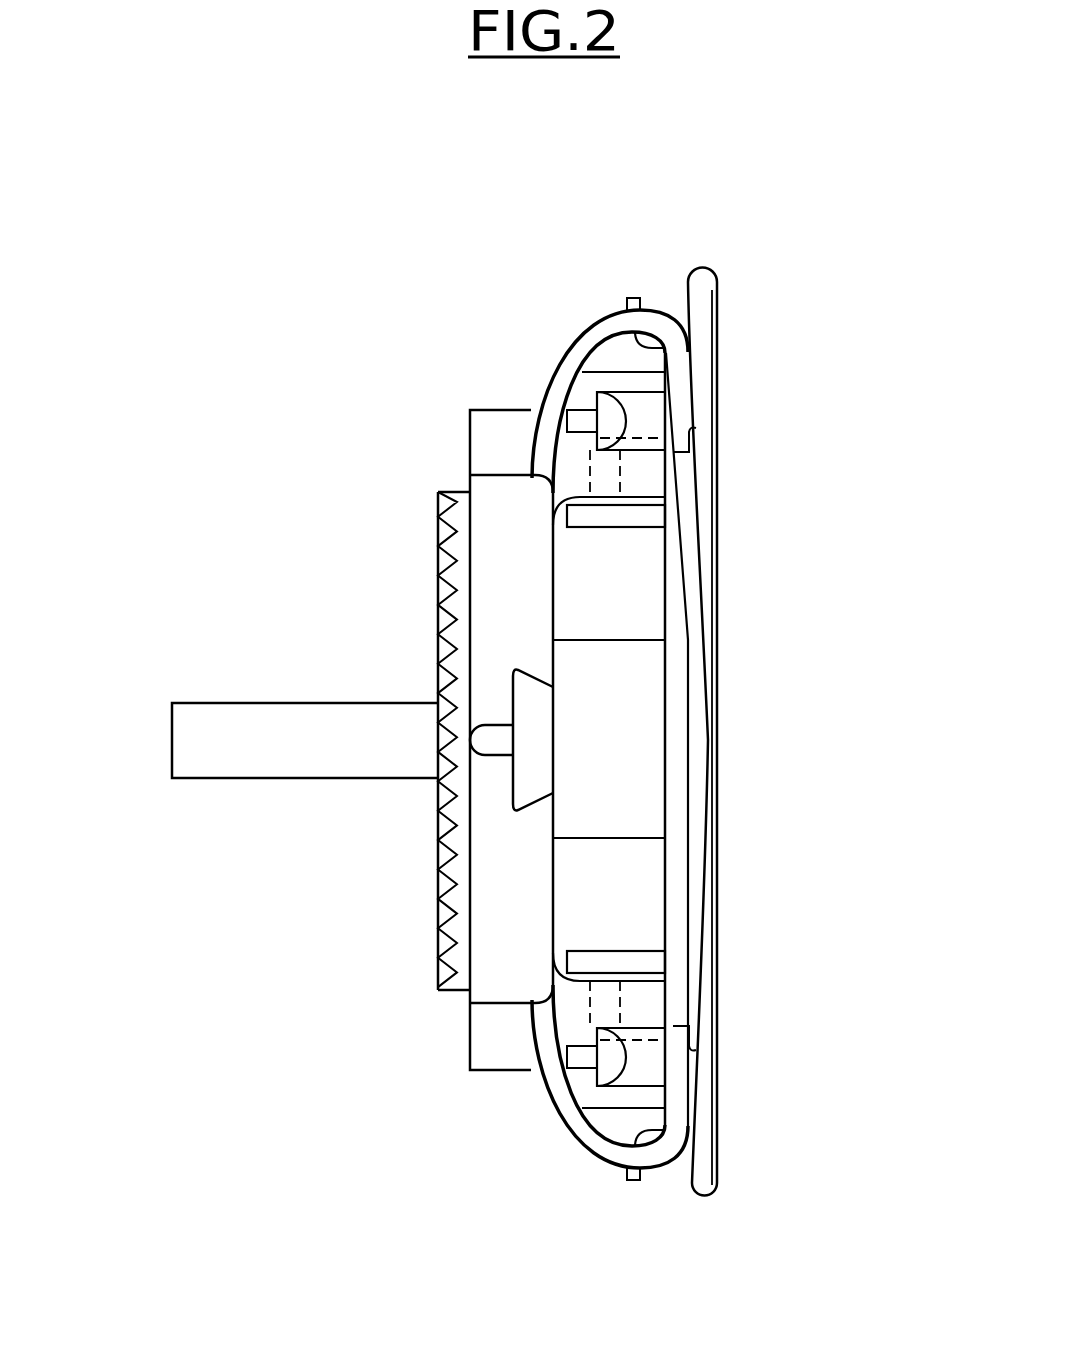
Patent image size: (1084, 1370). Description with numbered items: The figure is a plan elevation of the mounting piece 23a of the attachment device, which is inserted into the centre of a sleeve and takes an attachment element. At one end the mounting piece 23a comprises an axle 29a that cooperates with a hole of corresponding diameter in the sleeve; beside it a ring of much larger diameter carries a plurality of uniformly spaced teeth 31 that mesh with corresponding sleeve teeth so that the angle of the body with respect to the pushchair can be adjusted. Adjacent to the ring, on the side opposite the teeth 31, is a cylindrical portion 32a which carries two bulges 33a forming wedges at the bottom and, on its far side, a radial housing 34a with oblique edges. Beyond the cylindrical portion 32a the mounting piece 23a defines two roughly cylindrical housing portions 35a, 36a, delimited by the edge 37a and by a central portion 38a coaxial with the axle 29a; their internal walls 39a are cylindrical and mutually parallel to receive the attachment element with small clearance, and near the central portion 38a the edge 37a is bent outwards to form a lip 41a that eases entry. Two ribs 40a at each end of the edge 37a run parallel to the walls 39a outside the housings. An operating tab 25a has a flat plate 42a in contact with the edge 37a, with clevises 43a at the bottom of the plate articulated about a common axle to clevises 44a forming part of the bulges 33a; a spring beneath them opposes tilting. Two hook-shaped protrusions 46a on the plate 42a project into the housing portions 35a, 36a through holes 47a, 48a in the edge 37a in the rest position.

The mounting piece 23a is at (653, 308).
The operating tab 25a is at (725, 1155).
The axle 29a is at (240, 740).
The teeth 31 is at (435, 548).
The cylindrical portion 32a is at (510, 500).
The bulges 33a is at (510, 440).
The radial housing 34a is at (535, 700).
The housing portion 35a is at (615, 580).
The housing portion 36a is at (615, 898).
The edge 37a is at (615, 322).
The central portion 38a is at (628, 703).
The internal walls 39a is at (665, 348).
The ribs 40a is at (636, 298).
The lip 41a is at (698, 748).
The flat plate 42a is at (720, 797).
The clevises 43a is at (633, 517).
The clevises 44a is at (648, 477).
The protrusions 46a is at (643, 407).
The hole 47a is at (690, 452).
The hole 48a is at (690, 1026).